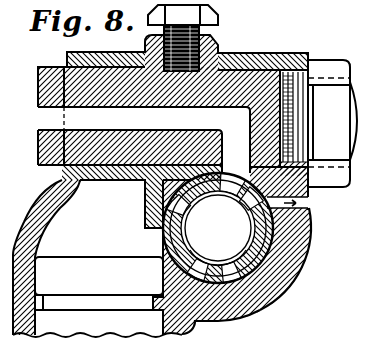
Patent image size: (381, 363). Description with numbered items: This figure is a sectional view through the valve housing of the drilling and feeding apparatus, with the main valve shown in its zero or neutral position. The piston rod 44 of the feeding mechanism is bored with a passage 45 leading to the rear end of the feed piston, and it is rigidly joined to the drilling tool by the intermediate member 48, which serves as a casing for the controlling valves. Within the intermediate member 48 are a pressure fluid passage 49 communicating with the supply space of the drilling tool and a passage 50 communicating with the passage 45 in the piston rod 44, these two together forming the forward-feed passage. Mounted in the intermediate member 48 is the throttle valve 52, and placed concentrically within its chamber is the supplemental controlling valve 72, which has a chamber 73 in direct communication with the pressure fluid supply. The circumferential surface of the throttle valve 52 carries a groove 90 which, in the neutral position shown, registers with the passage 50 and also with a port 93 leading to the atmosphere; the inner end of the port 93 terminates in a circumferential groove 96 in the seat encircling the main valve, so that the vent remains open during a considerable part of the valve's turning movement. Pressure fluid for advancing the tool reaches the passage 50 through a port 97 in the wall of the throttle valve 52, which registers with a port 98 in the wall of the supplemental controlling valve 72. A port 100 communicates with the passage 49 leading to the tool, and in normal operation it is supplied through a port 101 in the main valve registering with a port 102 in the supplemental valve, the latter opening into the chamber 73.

The piston rod 44 is at (38, 72).
The passage 45 is at (38, 105).
The intermediate member 48 is at (38, 278).
The pressure fluid passage 49 is at (53, 226).
The passage 50 is at (241, 164).
The throttle valve 52 is at (283, 265).
The supplemental controlling valve 72 is at (330, 238).
The chamber 73 is at (283, 292).
The groove 90 is at (218, 228).
The port 93 is at (300, 203).
The groove 96 is at (297, 222).
The port 97 is at (160, 197).
The port 98 is at (180, 228).
The port 100 is at (158, 243).
The port 101 is at (175, 279).
The port 102 is at (238, 262).